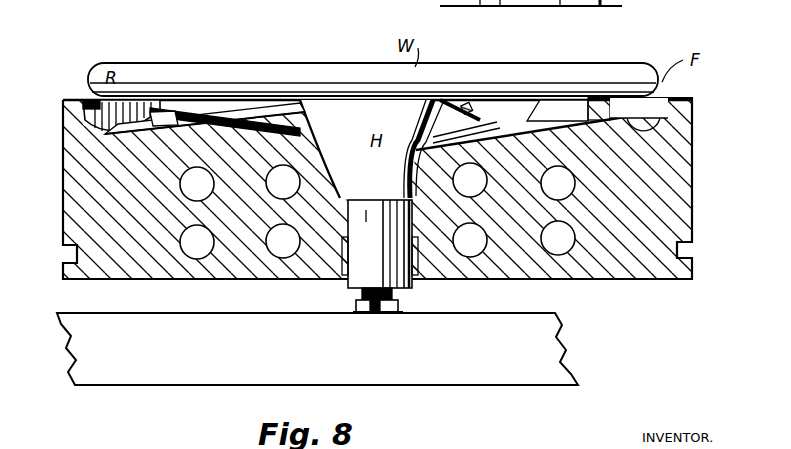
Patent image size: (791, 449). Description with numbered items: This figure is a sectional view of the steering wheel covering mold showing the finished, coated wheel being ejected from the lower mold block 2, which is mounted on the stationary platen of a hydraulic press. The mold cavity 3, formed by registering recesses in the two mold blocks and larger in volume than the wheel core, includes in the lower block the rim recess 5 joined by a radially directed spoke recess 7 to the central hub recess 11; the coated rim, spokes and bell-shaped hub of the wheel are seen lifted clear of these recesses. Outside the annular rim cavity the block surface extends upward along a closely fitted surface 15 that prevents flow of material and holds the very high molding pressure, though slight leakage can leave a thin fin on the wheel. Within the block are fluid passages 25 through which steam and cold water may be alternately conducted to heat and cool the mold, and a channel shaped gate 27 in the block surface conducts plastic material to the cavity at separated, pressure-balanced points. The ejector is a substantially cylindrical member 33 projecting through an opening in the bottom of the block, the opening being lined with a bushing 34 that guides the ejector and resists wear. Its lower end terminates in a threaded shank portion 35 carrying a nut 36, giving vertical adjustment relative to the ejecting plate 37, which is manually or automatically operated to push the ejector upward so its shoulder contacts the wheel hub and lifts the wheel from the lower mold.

The lower mold block 2 is at (680, 213).
The mold cavity 3 is at (225, 118).
The rim recess 5 is at (646, 130).
The spoke recess 7 is at (168, 138).
The hub recess 11 is at (425, 177).
The closely fitted surface 15 is at (66, 104).
The fluid passage 25 is at (197, 242).
The gate 27 is at (304, 150).
The cylindrical member 33 is at (352, 278).
The bushing 34 is at (349, 245).
The threaded shank portion 35 is at (386, 292).
The nut 36 is at (400, 310).
The ejecting plate 37 is at (233, 323).